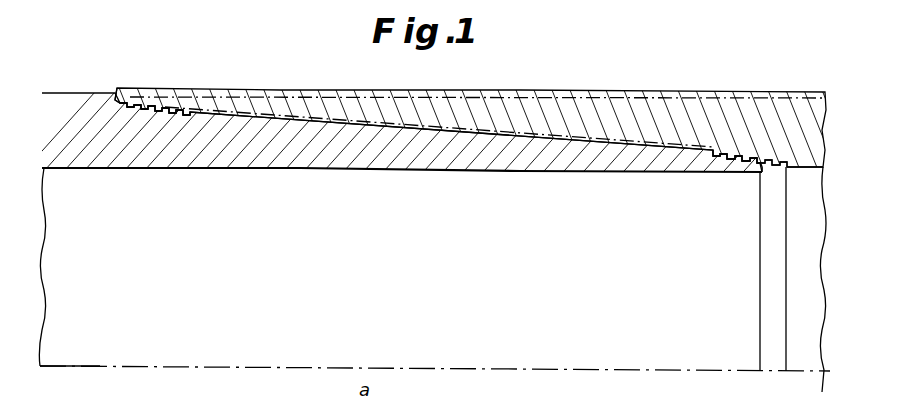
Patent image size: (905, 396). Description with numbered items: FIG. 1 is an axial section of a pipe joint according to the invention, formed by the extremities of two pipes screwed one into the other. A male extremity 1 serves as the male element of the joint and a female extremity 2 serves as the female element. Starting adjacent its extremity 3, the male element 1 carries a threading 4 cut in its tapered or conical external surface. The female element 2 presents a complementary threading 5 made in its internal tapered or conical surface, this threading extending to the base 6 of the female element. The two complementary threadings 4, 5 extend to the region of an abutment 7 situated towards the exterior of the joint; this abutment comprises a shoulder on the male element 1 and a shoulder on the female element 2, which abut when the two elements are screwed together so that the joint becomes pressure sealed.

The male extremity 1 is at (392, 173).
The female extremity 2 is at (526, 101).
The extremity of male element 3 is at (758, 173).
The threading 4 is at (185, 113).
The complementary threading 5 is at (716, 149).
The base 6 is at (797, 164).
The abutment 7 is at (114, 91).